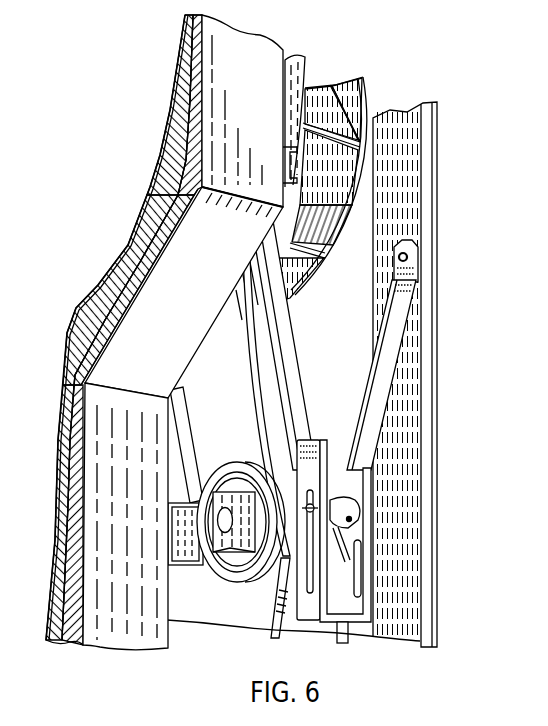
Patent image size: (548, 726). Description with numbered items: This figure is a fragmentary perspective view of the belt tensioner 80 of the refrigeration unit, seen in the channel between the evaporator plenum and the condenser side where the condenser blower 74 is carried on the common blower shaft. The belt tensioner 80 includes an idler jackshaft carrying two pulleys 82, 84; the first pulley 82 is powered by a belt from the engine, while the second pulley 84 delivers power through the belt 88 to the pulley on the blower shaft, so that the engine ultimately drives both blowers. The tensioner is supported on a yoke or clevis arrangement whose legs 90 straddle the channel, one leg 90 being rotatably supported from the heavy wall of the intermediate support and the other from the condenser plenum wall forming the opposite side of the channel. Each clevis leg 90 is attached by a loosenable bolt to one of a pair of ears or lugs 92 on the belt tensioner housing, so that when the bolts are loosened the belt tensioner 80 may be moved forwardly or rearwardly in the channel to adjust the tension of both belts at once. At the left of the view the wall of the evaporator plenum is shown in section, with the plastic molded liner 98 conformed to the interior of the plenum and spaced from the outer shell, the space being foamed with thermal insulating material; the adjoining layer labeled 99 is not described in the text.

The condenser blower 74 is at (355, 118).
The belt tensioner 80 is at (355, 537).
The pulley 82 is at (340, 583).
The pulley 84 is at (230, 573).
The belt 88 is at (257, 408).
The clevis leg 90 is at (365, 395).
The ear or lug 92 is at (348, 512).
The plastic molded liner 98 is at (167, 163).
The inner wall layer 99 is at (161, 206).